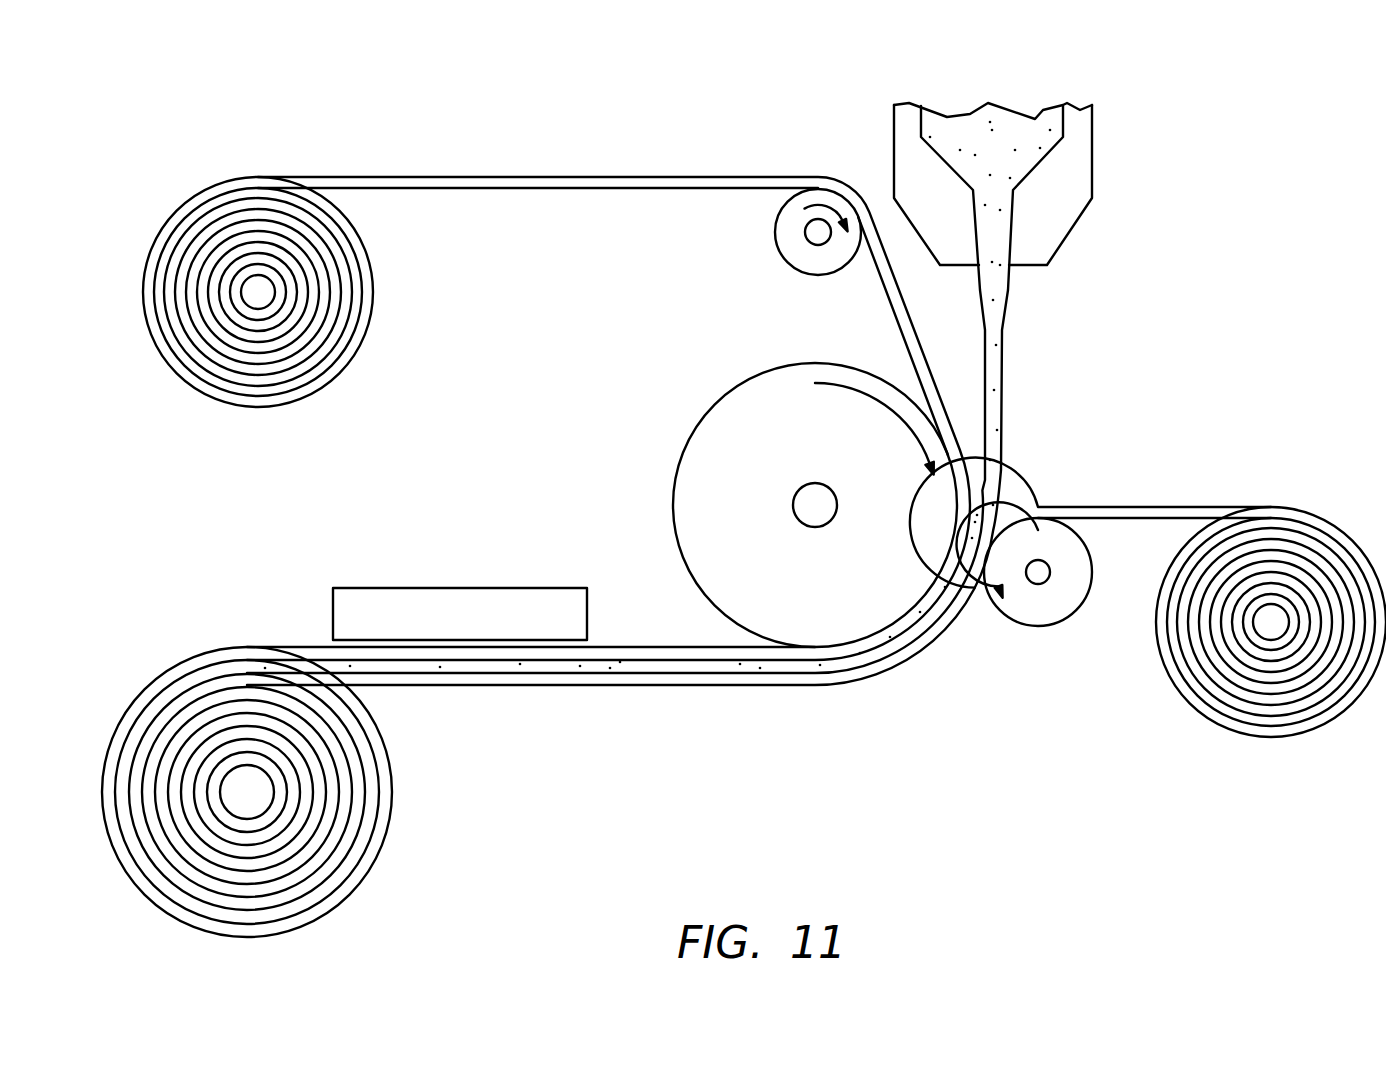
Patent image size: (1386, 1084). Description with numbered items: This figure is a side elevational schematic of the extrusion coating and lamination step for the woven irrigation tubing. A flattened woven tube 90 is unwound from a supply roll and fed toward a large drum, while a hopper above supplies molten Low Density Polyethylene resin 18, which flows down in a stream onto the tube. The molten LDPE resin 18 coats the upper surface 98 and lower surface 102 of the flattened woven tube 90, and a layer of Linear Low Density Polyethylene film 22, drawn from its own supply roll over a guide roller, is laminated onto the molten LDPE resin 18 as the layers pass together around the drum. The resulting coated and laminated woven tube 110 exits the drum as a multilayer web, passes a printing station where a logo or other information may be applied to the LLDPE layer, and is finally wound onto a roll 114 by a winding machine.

The LLDPE film 22 is at (707, 177).
The LDPE resin 18 is at (1003, 362).
The upper surface 98 is at (1102, 507).
The woven tube 90 is at (1330, 520).
The lower surface 102 is at (1093, 522).
The coated and laminated woven tube 110 is at (235, 652).
The roll 114 is at (350, 893).